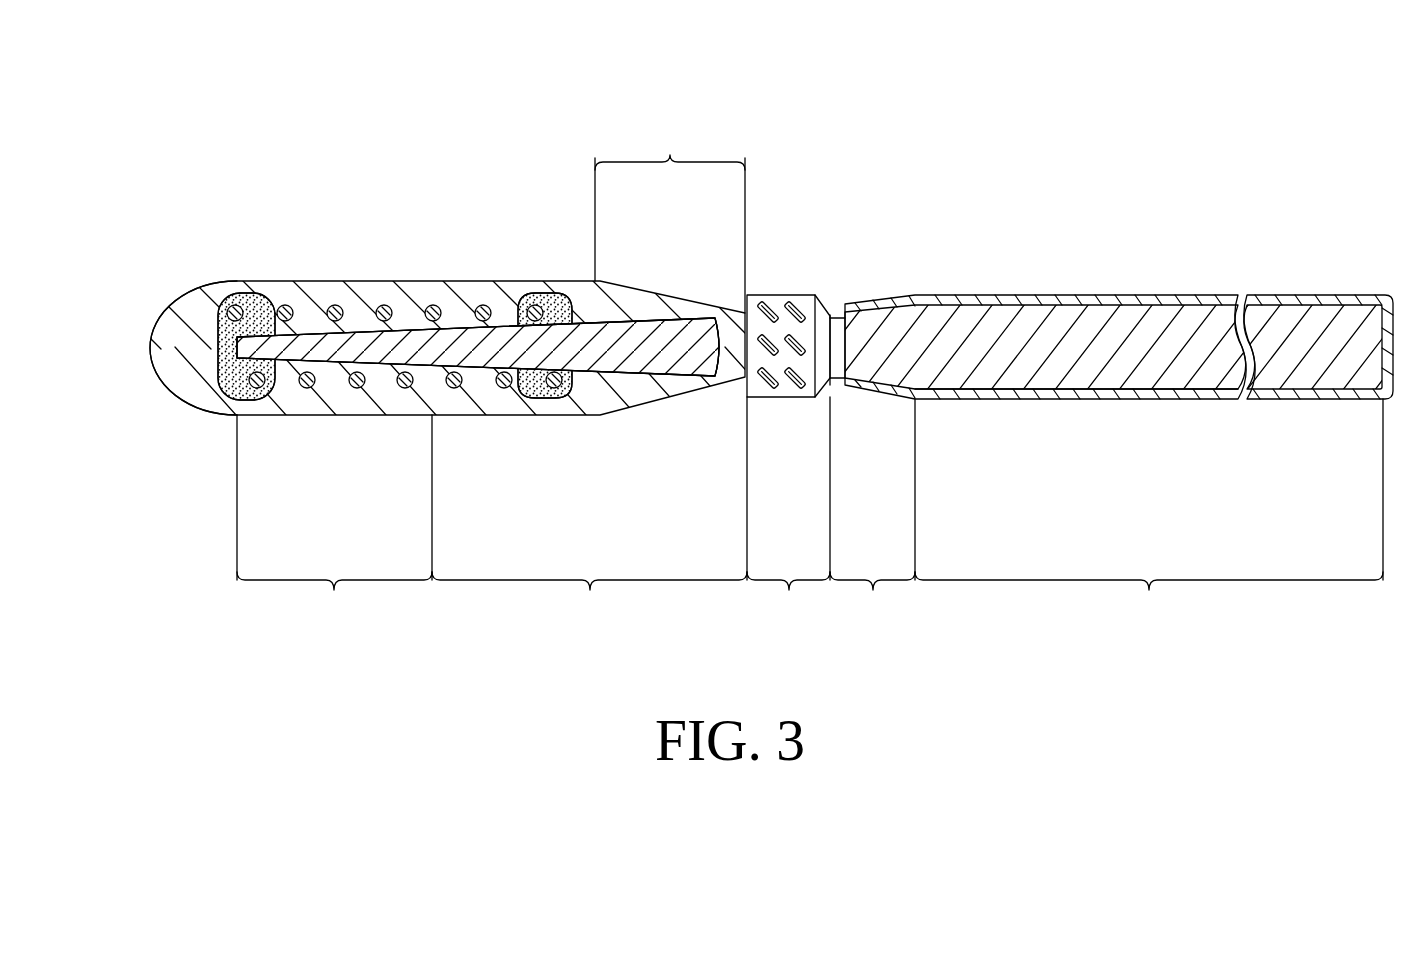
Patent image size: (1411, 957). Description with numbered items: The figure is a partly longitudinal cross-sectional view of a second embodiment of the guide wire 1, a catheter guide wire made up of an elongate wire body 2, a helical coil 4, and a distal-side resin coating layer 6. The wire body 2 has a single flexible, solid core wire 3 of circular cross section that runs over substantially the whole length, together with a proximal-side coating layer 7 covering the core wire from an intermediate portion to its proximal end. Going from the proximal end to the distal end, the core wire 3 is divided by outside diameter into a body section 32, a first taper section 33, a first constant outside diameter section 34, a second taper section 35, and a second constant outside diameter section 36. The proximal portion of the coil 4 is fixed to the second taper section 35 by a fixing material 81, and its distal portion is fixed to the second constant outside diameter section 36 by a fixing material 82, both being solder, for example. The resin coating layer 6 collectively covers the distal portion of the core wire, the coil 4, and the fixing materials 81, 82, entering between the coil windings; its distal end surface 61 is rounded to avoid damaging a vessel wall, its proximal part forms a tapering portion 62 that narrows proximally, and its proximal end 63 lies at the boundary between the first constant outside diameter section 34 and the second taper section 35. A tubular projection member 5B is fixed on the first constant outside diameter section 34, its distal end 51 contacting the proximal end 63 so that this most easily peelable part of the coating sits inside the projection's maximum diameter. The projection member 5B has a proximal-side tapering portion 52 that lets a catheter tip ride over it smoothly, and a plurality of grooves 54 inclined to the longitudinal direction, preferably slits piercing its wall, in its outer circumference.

The guide wire 1 is at (727, 266).
The wire body 2 is at (1097, 292).
The core wire 3 is at (1037, 312).
The helical coil 4 is at (479, 302).
The projection member 5B is at (797, 290).
The resin coating layer 6 is at (411, 302).
The proximal-side coating layer 7 is at (1100, 395).
The body section 32 is at (1149, 510).
The first taper section 33 is at (872, 510).
The first constant outside diameter section 34 is at (788, 509).
The second taper section 35 is at (589, 509).
The second constant outside diameter section 36 is at (334, 518).
The distal end of the projection member 51 is at (737, 300).
The proximal-side tapering portion 52 is at (834, 300).
The grooves 54 is at (768, 295).
The distal end surface 61 is at (150, 347).
The tapering portion 62 is at (670, 221).
The proximal end of the resin coating layer 63 is at (478, 347).
The fixing material 81 is at (546, 302).
The fixing material 82 is at (257, 302).